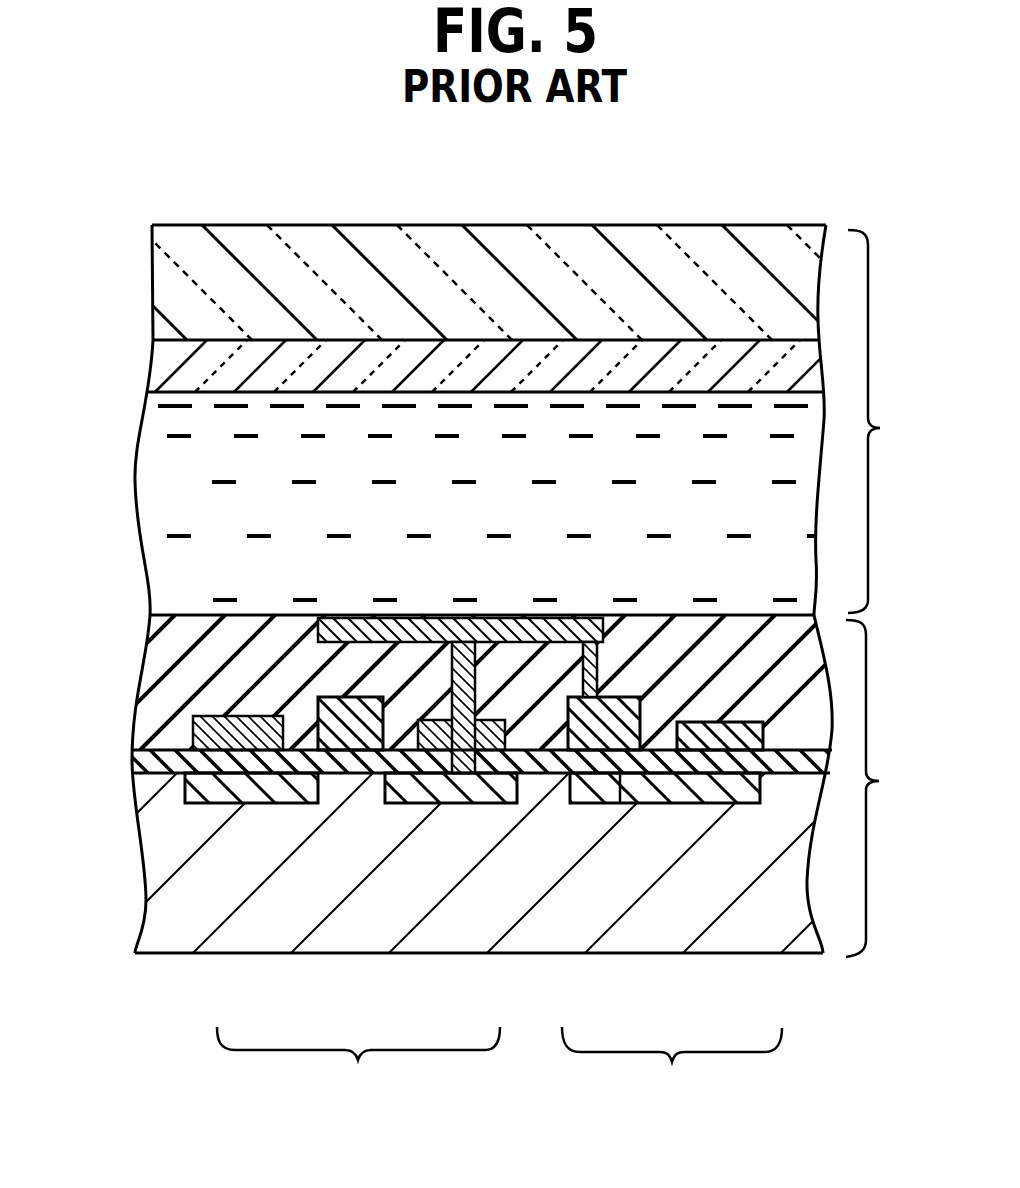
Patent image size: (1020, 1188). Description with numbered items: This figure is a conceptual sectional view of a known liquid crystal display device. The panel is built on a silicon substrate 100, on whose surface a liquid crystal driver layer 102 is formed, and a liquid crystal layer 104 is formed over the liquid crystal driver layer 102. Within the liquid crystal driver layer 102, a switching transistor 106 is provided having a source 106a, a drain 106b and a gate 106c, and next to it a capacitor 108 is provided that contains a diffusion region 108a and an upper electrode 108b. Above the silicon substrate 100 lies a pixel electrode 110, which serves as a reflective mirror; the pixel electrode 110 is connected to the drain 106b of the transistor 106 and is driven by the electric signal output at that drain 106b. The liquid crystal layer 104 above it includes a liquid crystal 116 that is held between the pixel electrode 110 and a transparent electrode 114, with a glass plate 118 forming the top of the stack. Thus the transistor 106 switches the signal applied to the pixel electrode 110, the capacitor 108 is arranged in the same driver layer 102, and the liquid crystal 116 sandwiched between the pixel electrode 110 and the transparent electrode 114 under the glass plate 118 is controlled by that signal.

The silicon substrate 100 is at (232, 862).
The liquid crystal driver layer 102 is at (896, 788).
The liquid crystal layer 104 is at (897, 421).
The switching transistor 106 is at (358, 1066).
The source 106a is at (256, 800).
The drain 106b is at (457, 790).
The gate 106c is at (350, 745).
The capacitor 108 is at (672, 1070).
The diffusion region 108a is at (703, 795).
The upper electrode 108b is at (607, 733).
The pixel electrode 110 is at (318, 640).
The transparent electrode 114 is at (197, 367).
The liquid crystal 116 is at (212, 511).
The glass plate 118 is at (225, 289).